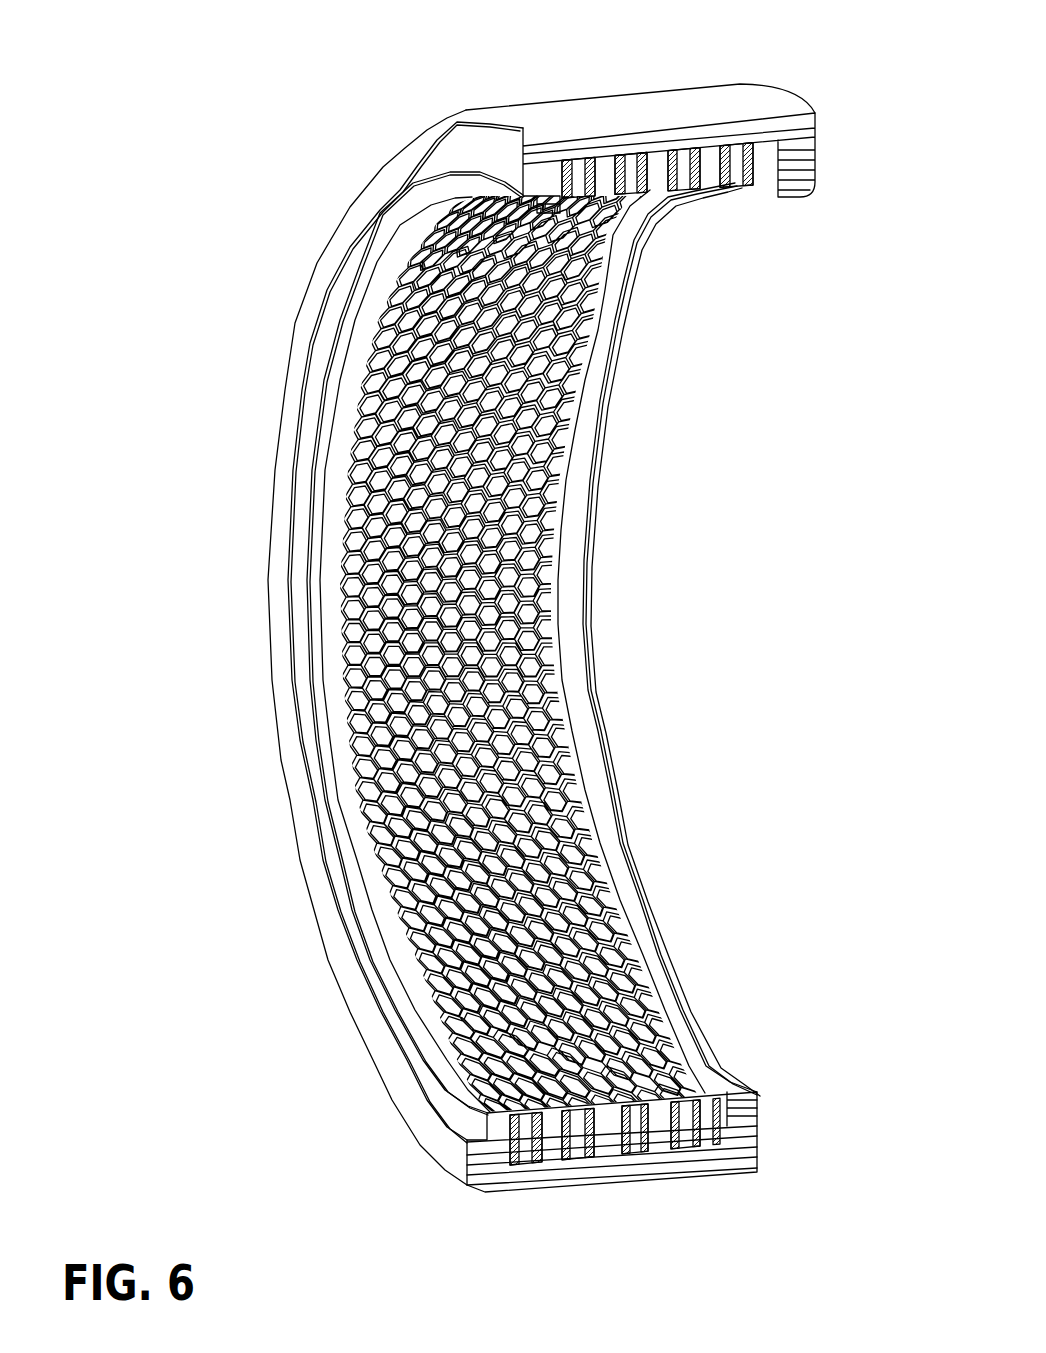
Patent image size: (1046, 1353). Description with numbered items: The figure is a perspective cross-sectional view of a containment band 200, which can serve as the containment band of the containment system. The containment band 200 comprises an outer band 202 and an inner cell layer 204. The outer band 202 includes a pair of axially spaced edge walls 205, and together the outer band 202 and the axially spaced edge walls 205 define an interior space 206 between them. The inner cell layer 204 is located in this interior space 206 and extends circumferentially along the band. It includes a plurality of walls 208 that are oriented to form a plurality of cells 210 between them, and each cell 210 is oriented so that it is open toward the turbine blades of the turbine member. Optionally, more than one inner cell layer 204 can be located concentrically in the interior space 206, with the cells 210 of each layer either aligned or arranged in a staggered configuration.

The containment band 200 is at (192, 88).
The outer band 202 is at (707, 104).
The inner cell layer 204 is at (583, 945).
The axially spaced edge walls 205 is at (452, 1145).
The interior space 206 is at (760, 188).
The walls 208 is at (640, 1147).
The cells 210 is at (505, 527).